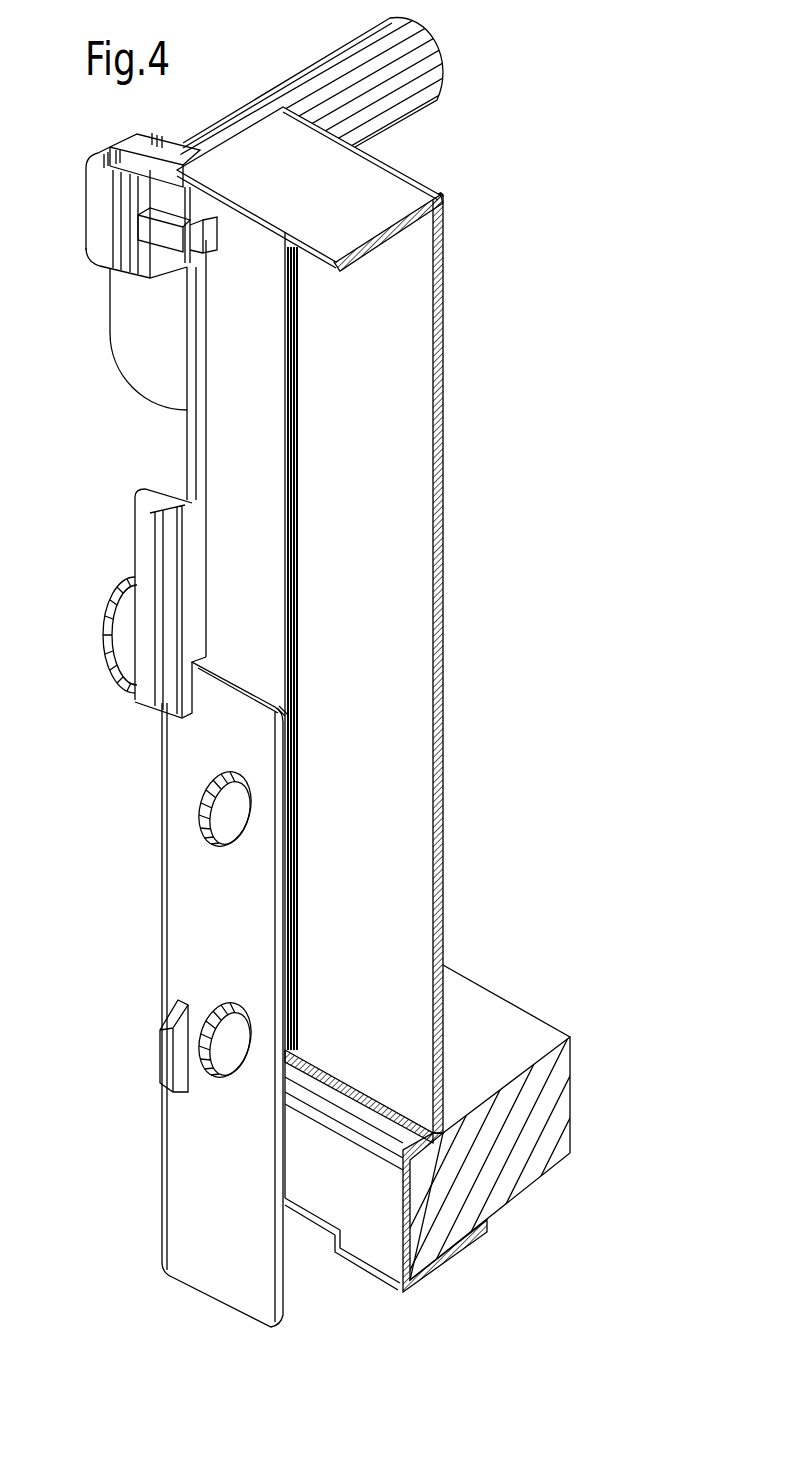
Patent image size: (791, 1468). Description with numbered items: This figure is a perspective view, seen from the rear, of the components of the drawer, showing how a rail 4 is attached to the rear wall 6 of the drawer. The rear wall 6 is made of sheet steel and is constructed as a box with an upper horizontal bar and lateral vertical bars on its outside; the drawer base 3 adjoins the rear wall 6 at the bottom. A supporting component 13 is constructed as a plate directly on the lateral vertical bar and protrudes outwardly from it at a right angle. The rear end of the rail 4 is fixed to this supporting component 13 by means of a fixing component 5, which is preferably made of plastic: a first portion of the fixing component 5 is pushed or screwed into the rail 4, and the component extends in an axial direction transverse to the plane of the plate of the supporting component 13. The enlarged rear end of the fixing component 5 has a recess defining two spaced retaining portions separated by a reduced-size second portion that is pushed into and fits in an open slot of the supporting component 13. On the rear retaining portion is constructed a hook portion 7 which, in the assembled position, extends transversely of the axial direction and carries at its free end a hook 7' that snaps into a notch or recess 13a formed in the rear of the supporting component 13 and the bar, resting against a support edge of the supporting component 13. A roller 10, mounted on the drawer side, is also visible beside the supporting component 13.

The drawer base 3 is at (508, 1018).
The rail 4 is at (417, 52).
The fixing component 5 is at (84, 266).
The rear wall 6 is at (450, 419).
The hook portion 7 is at (117, 324).
The hook 7' is at (212, 150).
The roller 10 is at (112, 650).
The supporting component 13 is at (157, 360).
The notch or recess 13a is at (217, 238).